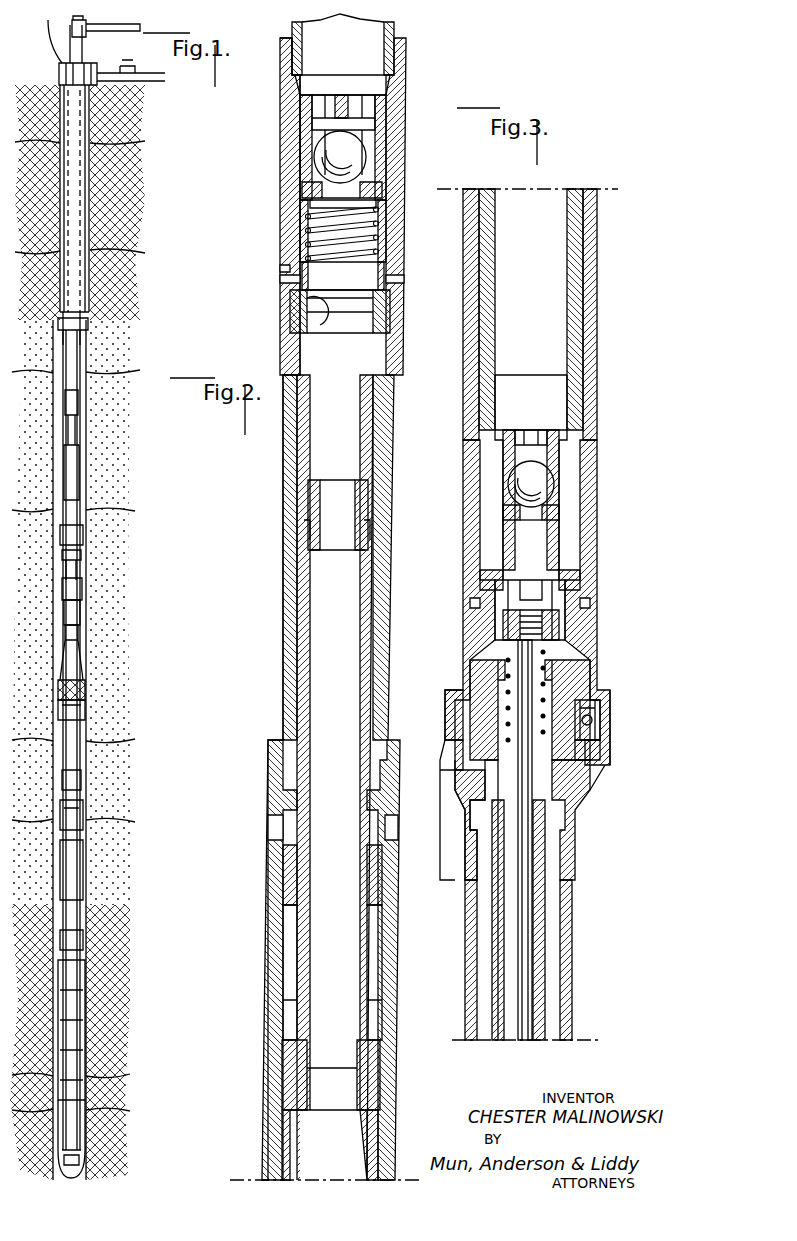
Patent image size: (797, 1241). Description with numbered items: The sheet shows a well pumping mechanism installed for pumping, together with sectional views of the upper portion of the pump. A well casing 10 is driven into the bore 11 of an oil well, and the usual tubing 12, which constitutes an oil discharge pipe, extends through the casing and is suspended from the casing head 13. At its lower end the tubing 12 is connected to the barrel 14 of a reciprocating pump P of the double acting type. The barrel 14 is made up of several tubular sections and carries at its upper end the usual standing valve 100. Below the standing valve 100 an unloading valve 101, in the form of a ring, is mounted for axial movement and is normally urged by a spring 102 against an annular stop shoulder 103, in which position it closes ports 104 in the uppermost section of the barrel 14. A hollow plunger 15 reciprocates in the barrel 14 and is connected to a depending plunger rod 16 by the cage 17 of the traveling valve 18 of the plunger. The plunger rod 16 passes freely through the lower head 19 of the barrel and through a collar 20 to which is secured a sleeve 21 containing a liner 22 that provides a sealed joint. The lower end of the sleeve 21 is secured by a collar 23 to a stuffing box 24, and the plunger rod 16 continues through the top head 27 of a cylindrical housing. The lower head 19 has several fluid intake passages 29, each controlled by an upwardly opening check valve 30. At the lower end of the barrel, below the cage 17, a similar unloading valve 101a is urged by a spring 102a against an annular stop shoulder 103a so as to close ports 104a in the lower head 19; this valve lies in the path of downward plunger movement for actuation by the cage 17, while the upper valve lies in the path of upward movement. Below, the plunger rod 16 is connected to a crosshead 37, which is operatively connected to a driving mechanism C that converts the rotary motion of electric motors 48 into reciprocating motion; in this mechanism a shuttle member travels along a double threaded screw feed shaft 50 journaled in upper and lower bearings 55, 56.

In FIG. 1, the well casing 10 is at (82, 220).
In FIG. 1, the bore 11 is at (85, 338).
In FIG. 1, the tubing 12 is at (58, 318).
In FIG. 2, the tubing 12 is at (395, 32).
In FIG. 1, the casing head 13 is at (70, 72).
In FIG. 1, the barrel 14 is at (103, 740).
In FIG. 2, the barrel 14 is at (283, 570).
In FIG. 3, the barrel 14 is at (595, 322).
In FIG. 2, the hollow plunger 15 is at (283, 1152).
In FIG. 3, the hollow plunger 15 is at (578, 262).
In FIG. 1, the plunger rod 16 is at (70, 672).
In FIG. 3, the plunger rod 16 is at (525, 965).
In FIG. 3, the cage 17 is at (548, 583).
In FIG. 3, the traveling valve 18 is at (540, 484).
In FIG. 1, the lower head 19 is at (78, 537).
In FIG. 3, the lower head 19 is at (597, 672).
In FIG. 1, the collar 20 is at (76, 555).
In FIG. 1, the sleeve 21 is at (77, 565).
In FIG. 3, the sleeve 21 is at (572, 920).
In FIG. 3, the liner 22 is at (545, 1007).
In FIG. 1, the collar 23 is at (75, 592).
In FIG. 1, the stuffing box 24 is at (75, 615).
In FIG. 1, the top head 27 is at (80, 692).
In FIG. 3, the fluid intake passages 29 is at (600, 742).
In FIG. 3, the check valve 30 is at (595, 716).
In FIG. 1, the crosshead 37 is at (78, 715).
In FIG. 1, the electric motors 48 is at (60, 1005).
In FIG. 1, the double threaded screw feed shaft 50 is at (68, 815).
In FIG. 1, the upper bearing 55 is at (70, 795).
In FIG. 1, the lower bearing 56 is at (75, 948).
In FIG. 2, the standing valve 100 is at (325, 155).
In FIG. 2, the unloading valve 101 is at (300, 268).
In FIG. 2, the spring 102 is at (300, 232).
In FIG. 2, the annular stop shoulder 103 is at (300, 322).
In FIG. 2, the ports 104 is at (425, 286).
In FIG. 3, the unloading valve 101a is at (580, 630).
In FIG. 3, the spring 102a is at (545, 690).
In FIG. 3, the annular stop shoulder 103a is at (498, 578).
In FIG. 3, the ports 104a is at (628, 593).
In FIG. 2, the reciprocating pump P is at (283, 640).
In FIG. 3, the reciprocating pump P is at (600, 436).
In FIG. 1, the driving mechanism C is at (65, 878).